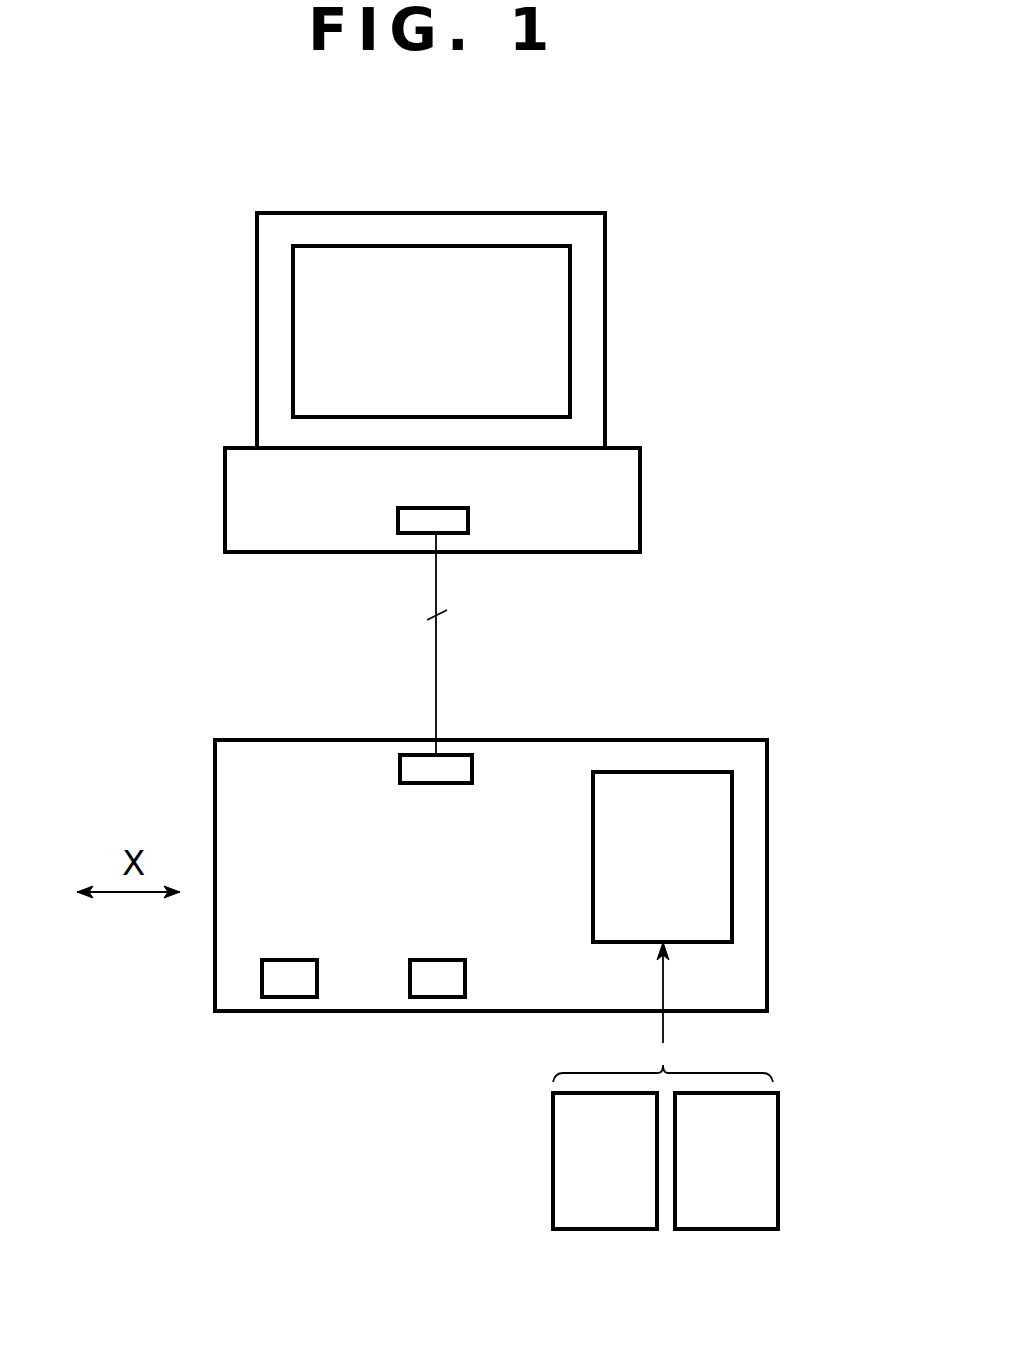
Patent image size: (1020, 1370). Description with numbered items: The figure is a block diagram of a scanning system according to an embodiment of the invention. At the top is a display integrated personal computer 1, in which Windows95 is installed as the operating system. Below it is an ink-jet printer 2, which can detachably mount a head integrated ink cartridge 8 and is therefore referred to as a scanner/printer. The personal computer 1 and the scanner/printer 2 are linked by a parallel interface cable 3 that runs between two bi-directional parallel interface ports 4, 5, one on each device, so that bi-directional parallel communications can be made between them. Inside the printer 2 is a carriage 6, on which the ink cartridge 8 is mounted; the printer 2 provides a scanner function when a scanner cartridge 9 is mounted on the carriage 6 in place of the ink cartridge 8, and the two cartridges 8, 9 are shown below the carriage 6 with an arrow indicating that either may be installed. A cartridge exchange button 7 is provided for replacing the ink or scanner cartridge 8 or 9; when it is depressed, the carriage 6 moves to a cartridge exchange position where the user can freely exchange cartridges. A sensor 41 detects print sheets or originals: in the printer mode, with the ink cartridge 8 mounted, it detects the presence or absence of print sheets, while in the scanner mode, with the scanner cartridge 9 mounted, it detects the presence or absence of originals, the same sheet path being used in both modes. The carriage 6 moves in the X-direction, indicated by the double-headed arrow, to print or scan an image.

The display integrated personal computer 1 is at (606, 278).
The ink-jet printer 2 is at (767, 797).
The parallel interface cable 3 is at (437, 688).
The bi-directional parallel interface port 4 is at (469, 512).
The bi-directional parallel interface port 5 is at (455, 785).
The carriage 6 is at (590, 917).
The cartridge exchange button 7 is at (300, 960).
The sensor 41 is at (448, 960).
The head integrated ink cartridge 8 is at (636, 1230).
The scanner cartridge 9 is at (758, 1230).